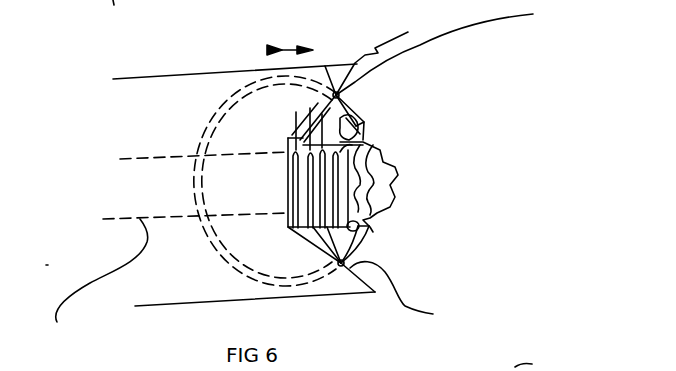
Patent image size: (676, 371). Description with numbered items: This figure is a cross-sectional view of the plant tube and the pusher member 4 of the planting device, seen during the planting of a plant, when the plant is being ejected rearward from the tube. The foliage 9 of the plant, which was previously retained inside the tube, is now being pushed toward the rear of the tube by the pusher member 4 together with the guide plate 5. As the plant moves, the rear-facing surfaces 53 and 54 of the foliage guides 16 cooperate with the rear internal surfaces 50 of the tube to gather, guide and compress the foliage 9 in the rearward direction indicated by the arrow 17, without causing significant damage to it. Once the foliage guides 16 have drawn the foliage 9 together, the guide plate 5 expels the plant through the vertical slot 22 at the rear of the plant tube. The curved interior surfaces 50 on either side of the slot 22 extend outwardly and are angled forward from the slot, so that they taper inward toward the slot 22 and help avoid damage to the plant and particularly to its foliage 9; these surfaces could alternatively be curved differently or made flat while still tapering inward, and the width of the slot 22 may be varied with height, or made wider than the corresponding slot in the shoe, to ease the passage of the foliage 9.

The pusher member 4 is at (342, 297).
The guide plate 5 is at (169, 257).
The foliage 9 is at (339, 94).
The foliage guides 16 is at (389, 54).
The arrow 17 is at (313, 48).
The slot 22 is at (372, 140).
The rear internal surfaces 50 is at (362, 124).
The rear-facing surface 53 is at (412, 294).
The rear-facing surface 54 is at (453, 47).